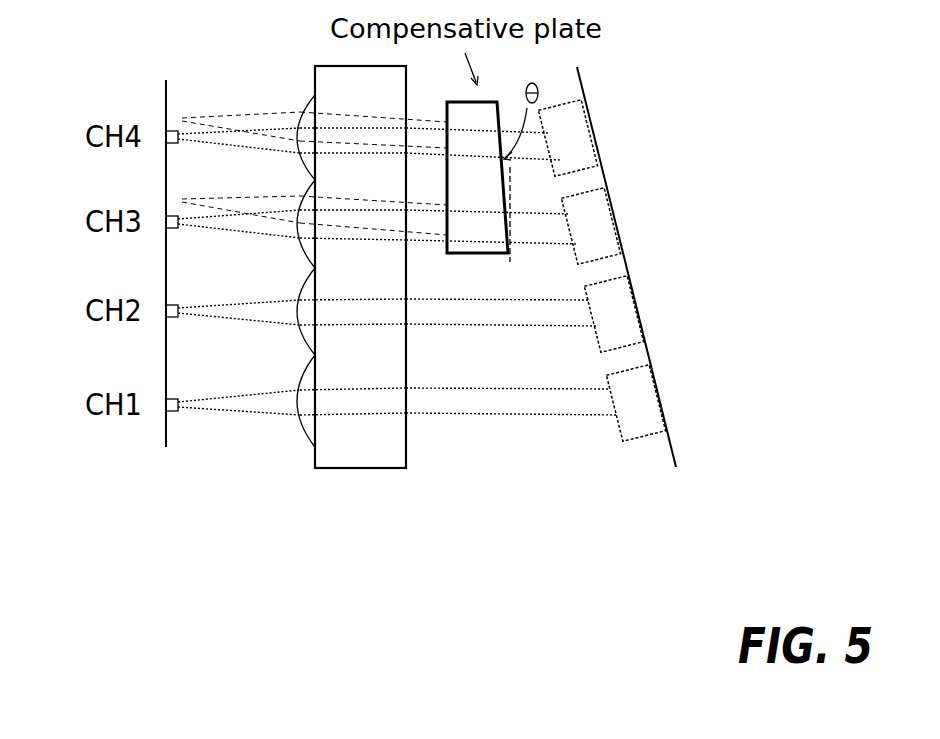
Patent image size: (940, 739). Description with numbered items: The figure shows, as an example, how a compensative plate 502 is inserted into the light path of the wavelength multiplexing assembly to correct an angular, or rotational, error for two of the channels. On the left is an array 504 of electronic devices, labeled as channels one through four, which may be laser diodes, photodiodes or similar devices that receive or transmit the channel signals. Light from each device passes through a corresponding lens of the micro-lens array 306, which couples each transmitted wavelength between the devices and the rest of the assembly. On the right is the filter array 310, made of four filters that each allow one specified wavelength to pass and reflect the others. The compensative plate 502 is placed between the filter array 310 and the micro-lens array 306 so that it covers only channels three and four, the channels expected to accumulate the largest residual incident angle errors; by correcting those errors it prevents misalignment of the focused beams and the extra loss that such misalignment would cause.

The array of electronic devices 504 is at (151, 239).
The micro-lens array 306 is at (351, 300).
The compensative plate 502 is at (627, 242).
The filter array 310 is at (608, 304).